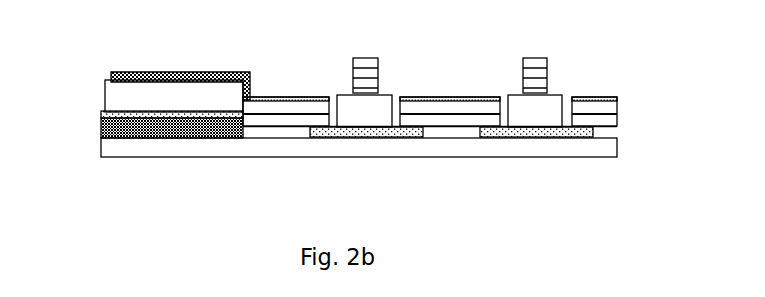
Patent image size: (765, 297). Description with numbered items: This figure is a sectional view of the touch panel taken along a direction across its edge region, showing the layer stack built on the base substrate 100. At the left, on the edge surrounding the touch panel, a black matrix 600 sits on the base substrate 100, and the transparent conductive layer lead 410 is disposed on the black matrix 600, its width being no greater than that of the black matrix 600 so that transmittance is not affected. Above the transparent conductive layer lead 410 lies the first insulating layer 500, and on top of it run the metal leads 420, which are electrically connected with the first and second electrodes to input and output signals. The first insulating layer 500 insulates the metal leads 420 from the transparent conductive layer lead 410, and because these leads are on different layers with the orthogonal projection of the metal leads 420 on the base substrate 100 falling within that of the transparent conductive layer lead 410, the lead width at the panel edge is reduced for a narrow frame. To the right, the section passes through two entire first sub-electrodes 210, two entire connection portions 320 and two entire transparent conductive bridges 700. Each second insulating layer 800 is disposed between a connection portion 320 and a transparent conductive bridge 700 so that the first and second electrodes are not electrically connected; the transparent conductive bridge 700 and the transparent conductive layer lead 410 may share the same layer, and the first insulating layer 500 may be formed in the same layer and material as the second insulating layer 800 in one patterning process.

The base substrate 100 is at (142, 150).
The first sub-electrode 210 is at (382, 35).
The connection portion 320 is at (467, 100).
The transparent conductive layer lead 410 is at (275, 120).
The metal lead 420 is at (143, 73).
The first insulating layer 500 is at (138, 105).
The black matrix 600 is at (101, 133).
The transparent conductive bridge 700 is at (380, 132).
The second insulating layer 800 is at (542, 117).